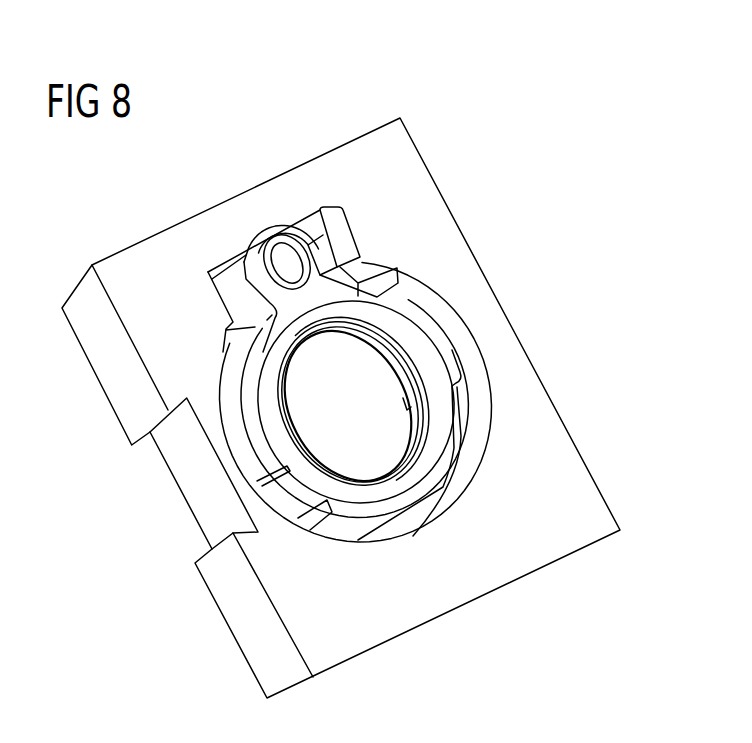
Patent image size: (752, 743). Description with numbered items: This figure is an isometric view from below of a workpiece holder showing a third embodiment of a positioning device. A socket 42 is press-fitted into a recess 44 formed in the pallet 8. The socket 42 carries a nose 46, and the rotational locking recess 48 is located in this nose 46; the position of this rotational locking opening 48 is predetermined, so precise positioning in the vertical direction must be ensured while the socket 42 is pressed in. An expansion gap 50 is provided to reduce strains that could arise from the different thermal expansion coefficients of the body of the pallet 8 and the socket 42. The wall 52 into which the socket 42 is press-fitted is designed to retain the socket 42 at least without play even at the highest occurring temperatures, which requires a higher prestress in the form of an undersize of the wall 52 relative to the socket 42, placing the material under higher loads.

The pallet 8 is at (521, 247).
The socket 42 is at (400, 268).
The recess 44 is at (372, 370).
The nose 46 is at (307, 292).
The rotational locking recess 48 is at (281, 268).
The expansion gap 50 is at (233, 370).
The wall 52 is at (455, 450).